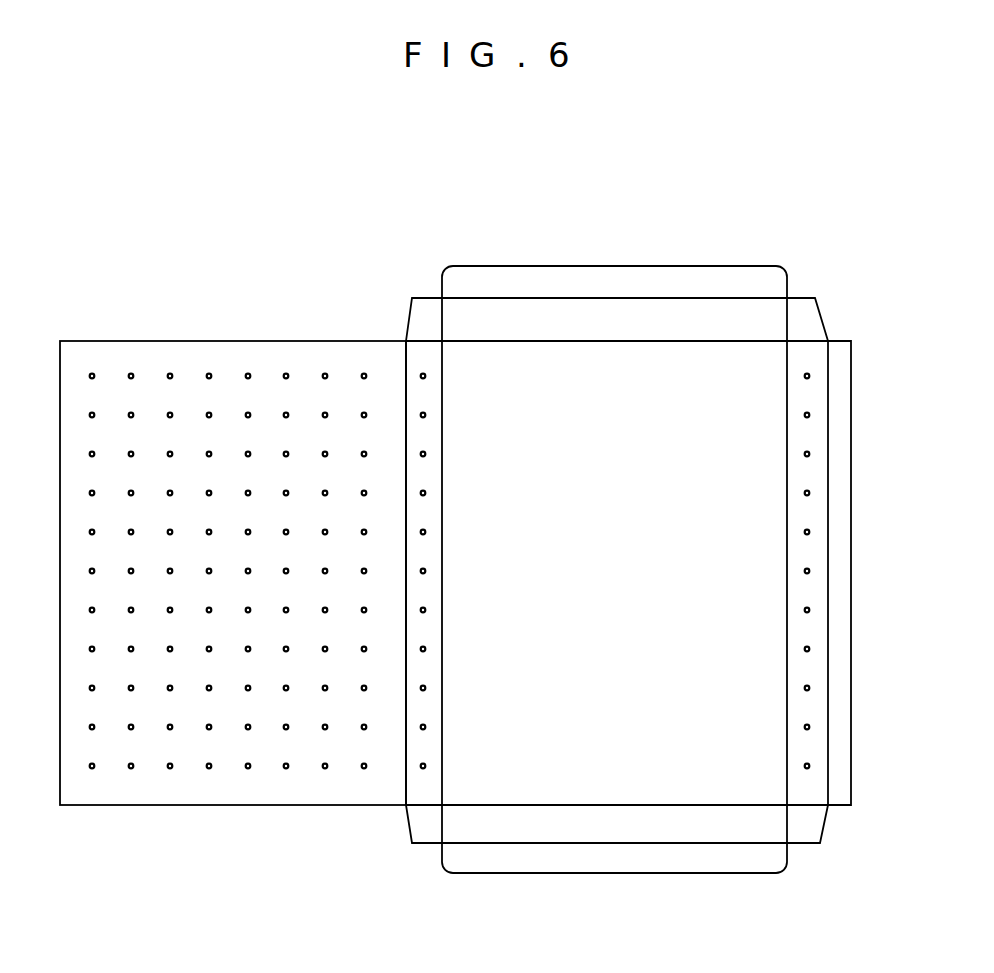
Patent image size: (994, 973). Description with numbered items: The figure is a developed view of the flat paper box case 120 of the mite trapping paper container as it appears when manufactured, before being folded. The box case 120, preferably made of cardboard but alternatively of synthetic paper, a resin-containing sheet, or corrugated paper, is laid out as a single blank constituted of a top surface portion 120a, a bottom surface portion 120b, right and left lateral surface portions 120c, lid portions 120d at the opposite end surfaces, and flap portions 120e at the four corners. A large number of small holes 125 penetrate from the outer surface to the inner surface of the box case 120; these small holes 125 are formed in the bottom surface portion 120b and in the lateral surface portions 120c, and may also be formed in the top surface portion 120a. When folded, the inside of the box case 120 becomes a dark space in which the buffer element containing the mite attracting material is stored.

The box case 120 is at (341, 340).
The top surface portion 120a is at (670, 363).
The bottom surface portion 120b is at (229, 357).
The lateral surface portions 120c is at (434, 667).
The lid portions 120d is at (610, 266).
The flap portions 120e is at (424, 305).
The small holes 125 is at (132, 372).